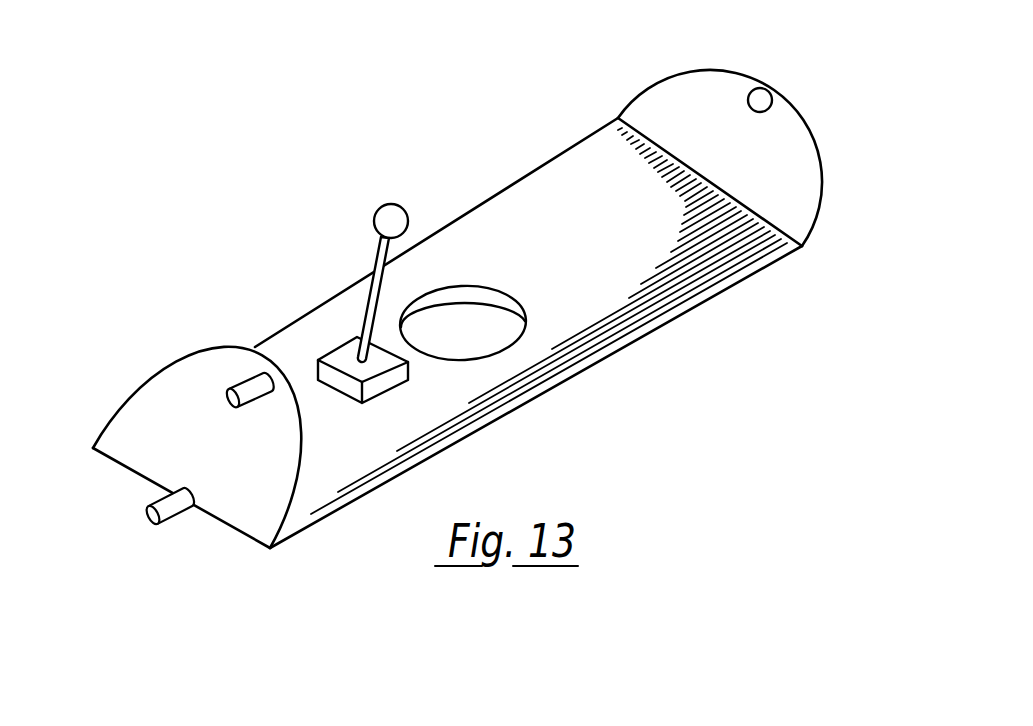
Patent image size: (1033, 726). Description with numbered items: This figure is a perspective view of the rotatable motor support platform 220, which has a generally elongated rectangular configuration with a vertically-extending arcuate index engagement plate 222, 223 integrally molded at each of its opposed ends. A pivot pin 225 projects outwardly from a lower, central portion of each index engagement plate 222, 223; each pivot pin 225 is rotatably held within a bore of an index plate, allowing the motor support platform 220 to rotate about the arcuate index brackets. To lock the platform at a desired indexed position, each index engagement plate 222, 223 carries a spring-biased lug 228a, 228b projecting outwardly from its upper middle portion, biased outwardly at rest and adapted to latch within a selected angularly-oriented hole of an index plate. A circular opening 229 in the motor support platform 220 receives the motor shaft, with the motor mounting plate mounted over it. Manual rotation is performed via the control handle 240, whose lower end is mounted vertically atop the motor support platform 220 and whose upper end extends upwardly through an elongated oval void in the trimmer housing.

The rotatable motor support platform 220 is at (430, 132).
The index engagement plate 222 is at (138, 453).
The index engagement plate 223 is at (826, 198).
The pivot pin 225 is at (148, 522).
The spring-biased lug 228a is at (262, 400).
The spring-biased lug 228b is at (762, 88).
The circular opening 229 is at (528, 323).
The control handle 240 is at (380, 243).